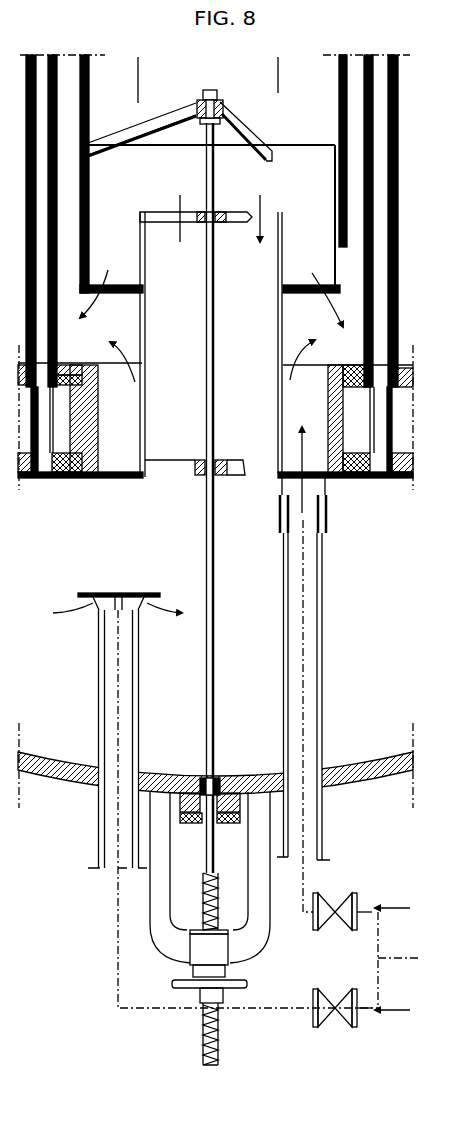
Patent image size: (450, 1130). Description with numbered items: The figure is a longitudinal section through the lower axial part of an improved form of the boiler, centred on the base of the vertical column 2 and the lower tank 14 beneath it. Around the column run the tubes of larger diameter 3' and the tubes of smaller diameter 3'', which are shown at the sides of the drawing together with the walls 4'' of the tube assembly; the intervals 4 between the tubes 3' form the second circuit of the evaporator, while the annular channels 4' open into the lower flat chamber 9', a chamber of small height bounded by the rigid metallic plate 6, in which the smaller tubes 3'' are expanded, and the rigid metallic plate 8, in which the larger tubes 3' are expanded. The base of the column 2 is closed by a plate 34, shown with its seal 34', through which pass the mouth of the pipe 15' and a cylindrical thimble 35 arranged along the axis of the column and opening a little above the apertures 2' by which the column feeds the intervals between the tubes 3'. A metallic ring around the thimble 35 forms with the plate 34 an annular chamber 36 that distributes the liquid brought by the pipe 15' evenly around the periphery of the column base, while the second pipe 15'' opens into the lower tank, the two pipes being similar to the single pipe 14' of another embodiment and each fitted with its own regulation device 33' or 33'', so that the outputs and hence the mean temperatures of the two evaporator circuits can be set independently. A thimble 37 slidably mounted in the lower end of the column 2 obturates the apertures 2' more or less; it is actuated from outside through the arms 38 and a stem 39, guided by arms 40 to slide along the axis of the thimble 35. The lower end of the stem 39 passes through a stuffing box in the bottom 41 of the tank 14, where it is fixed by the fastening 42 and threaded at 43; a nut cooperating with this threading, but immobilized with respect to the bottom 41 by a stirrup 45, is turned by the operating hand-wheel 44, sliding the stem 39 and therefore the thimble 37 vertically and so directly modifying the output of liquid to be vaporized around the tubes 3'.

The vertical column 2 is at (214, 219).
The apertures 2' is at (244, 319).
The tubes of larger diameter 3' is at (50, 264).
The tubes of smaller diameter 3'' is at (390, 254).
The intervals between the tubes 4 is at (326, 151).
The annular channels 4' is at (55, 254).
The tube wall 4'' is at (405, 264).
The rigid metallic plate 6 is at (53, 478).
The rigid metallic plate 8 is at (73, 365).
The flat chamber 9' is at (361, 421).
The tank 14 is at (234, 684).
The pipe 14' is at (401, 943).
The pipe 15' is at (318, 716).
The pipe 15'' is at (216, 800).
The regulation device 33' is at (361, 939).
The regulation device 33'' is at (361, 993).
The plate 34 is at (89, 479).
The seal sleeve 34' is at (99, 419).
The cylindrical thimble 35 is at (280, 405).
The annular chamber 36 is at (335, 475).
The thimble 37 is at (90, 205).
The arms 38 is at (243, 130).
The stem 39 is at (214, 628).
The arms 40 is at (157, 225).
The bottom 41 is at (348, 763).
The fastening assembly 42 is at (215, 785).
The threading 43 is at (218, 905).
The operating hand-wheel 44 is at (245, 983).
The stirrup 45 is at (160, 900).